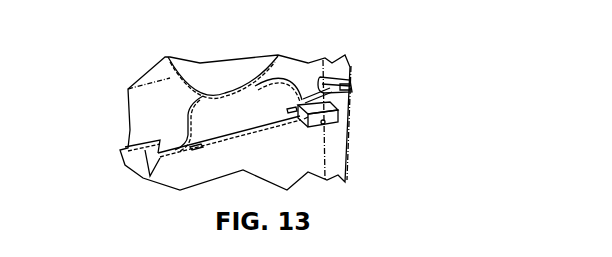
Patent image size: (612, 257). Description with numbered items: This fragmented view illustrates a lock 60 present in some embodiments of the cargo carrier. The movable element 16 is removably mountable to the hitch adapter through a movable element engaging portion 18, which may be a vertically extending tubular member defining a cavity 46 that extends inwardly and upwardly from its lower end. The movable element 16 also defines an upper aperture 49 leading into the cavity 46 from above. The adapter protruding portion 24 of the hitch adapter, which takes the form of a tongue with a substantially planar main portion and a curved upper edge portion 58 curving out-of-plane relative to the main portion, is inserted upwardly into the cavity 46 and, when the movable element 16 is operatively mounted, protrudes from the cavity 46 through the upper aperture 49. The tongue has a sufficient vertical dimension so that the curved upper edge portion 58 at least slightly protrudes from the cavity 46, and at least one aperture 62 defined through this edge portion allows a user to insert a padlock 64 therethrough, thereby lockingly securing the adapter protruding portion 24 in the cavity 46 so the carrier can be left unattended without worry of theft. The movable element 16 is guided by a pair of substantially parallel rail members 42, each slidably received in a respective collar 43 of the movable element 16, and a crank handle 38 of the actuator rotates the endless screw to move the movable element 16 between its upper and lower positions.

The movable element 16 is at (350, 115).
The movable element engaging portion 18 is at (307, 155).
The adapter protruding portion 24 is at (217, 140).
The crank handle 38 is at (231, 72).
The rail members 42 is at (346, 77).
The collar 43 is at (344, 86).
The cavity 46 is at (160, 158).
The upper aperture 49 is at (152, 150).
The curved upper edge portion 58 is at (278, 88).
The lock 60 is at (322, 128).
The aperture 62 is at (292, 115).
The padlock 64 is at (308, 125).